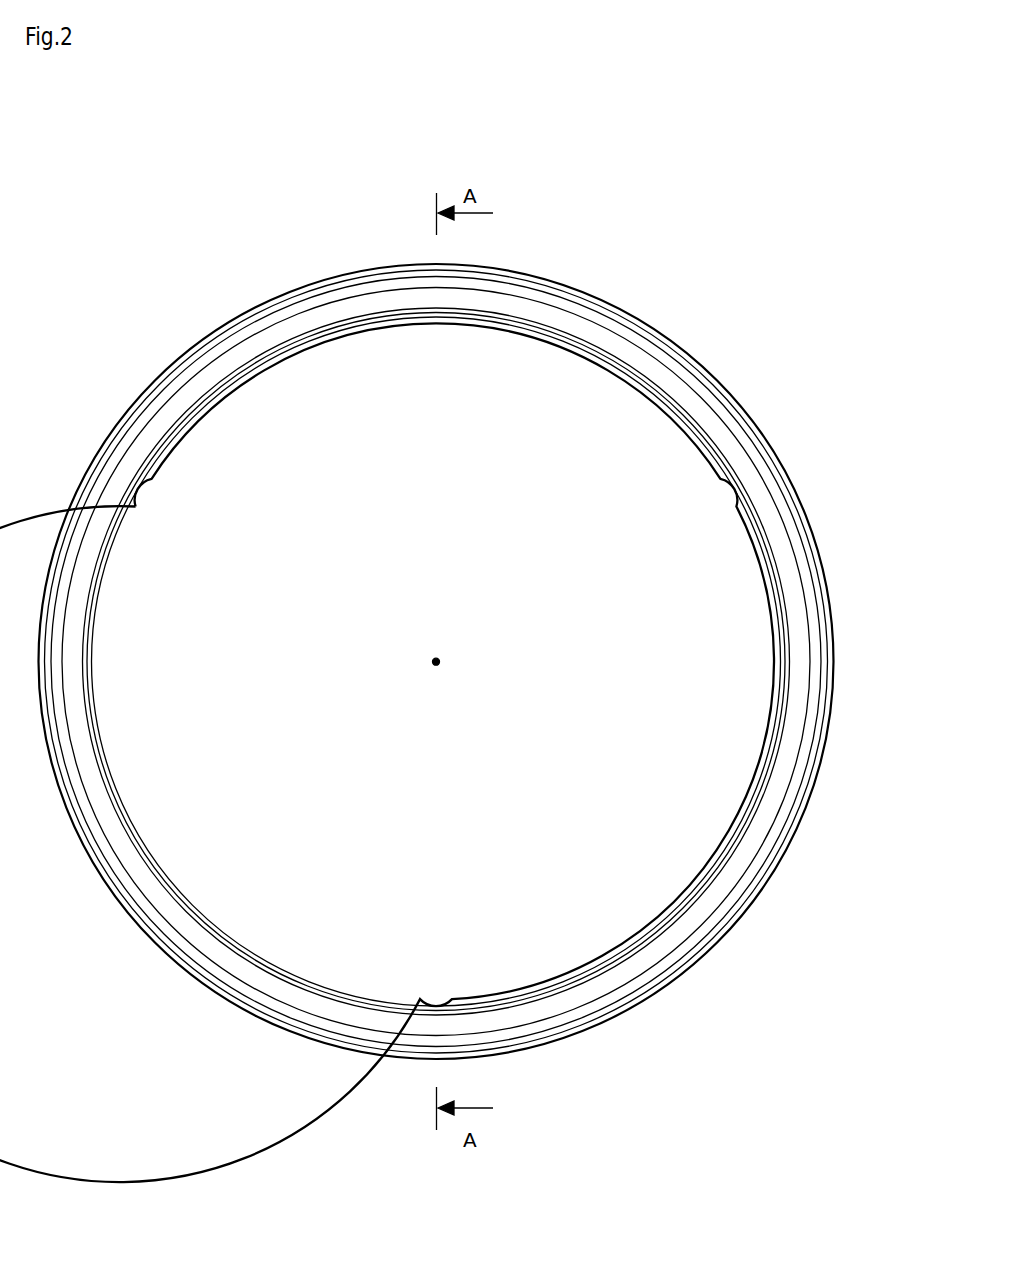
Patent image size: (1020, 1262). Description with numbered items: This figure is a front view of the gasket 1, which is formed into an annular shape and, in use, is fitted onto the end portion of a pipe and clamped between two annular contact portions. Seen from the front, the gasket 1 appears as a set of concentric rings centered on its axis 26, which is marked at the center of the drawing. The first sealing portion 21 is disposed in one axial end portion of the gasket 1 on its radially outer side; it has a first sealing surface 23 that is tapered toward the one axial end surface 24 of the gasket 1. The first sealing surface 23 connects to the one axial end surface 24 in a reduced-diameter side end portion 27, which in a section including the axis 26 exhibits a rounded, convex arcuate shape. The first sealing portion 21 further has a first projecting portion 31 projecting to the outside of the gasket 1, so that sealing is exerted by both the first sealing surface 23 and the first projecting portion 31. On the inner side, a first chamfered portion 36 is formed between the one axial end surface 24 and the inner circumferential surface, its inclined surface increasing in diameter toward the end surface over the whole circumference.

The gasket 1 is at (647, 280).
The first sealing portion 21 is at (688, 973).
The first sealing surface 23 is at (230, 990).
The one axial end surface 24 is at (133, 857).
The axis 26 is at (437, 658).
The reduced-diameter side end portion 27 is at (717, 917).
The first projecting portion 31 is at (180, 360).
The first chamfered portion 36 is at (118, 540).